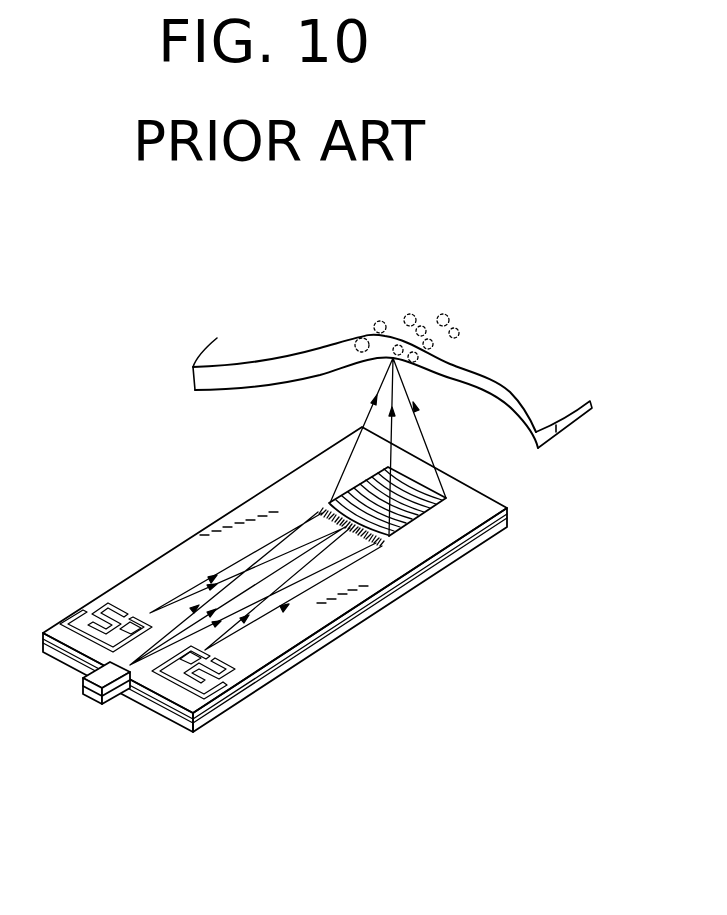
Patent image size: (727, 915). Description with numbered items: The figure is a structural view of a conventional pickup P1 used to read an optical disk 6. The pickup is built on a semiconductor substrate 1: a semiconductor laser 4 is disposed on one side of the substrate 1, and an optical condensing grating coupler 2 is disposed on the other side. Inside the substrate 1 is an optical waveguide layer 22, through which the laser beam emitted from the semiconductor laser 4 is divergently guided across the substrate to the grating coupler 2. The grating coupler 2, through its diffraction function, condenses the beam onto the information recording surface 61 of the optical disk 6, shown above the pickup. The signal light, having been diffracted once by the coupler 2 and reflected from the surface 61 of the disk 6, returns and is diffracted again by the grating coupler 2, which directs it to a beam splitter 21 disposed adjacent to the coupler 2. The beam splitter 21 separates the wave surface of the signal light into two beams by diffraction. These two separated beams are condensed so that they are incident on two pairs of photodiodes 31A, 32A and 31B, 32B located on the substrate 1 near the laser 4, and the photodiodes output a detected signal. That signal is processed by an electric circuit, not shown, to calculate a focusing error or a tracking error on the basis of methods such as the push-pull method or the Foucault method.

The semiconductor substrate 1 is at (463, 565).
The optical condensing grating coupler 2 is at (348, 497).
The semiconductor laser 4 is at (88, 702).
The optical disk 6 is at (596, 420).
The beam splitter 21 is at (380, 547).
The optical waveguide layer 22 is at (170, 724).
The photodiode 31A is at (262, 668).
The photodiode 31B is at (150, 612).
The photodiode 32A is at (212, 655).
The photodiode 32B is at (140, 615).
The information recording surface 61 is at (415, 330).
The conventional pickup P1 is at (463, 716).